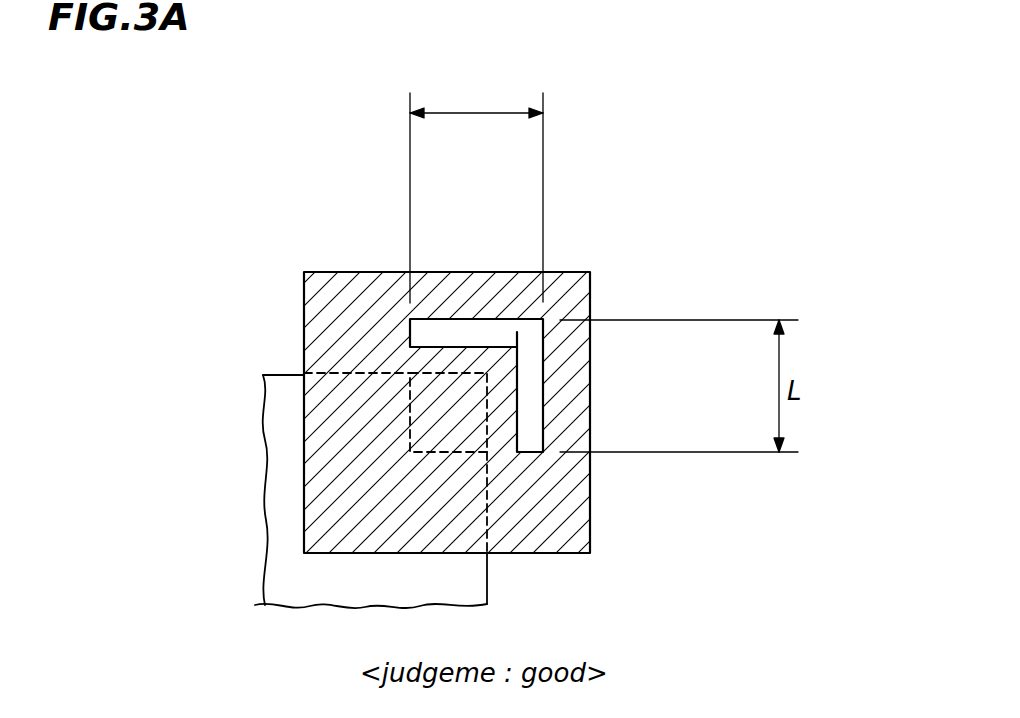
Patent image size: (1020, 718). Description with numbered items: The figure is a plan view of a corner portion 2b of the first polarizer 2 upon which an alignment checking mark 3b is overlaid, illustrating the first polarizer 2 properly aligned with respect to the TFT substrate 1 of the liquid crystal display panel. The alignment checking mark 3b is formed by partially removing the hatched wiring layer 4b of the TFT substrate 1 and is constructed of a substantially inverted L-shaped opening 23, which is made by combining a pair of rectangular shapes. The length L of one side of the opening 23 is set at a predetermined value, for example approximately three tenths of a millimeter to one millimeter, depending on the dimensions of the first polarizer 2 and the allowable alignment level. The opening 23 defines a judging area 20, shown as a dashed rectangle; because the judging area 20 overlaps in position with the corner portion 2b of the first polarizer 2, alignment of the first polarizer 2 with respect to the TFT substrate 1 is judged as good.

The TFT substrate 1 is at (213, 378).
The first polarizer 2 is at (278, 553).
The corner portion of first polarizer 2b is at (488, 373).
The alignment checking mark 3b is at (458, 327).
The wiring layer 4b is at (578, 505).
The judging area 20 is at (497, 452).
The inverted L-shaped opening 23 is at (490, 330).